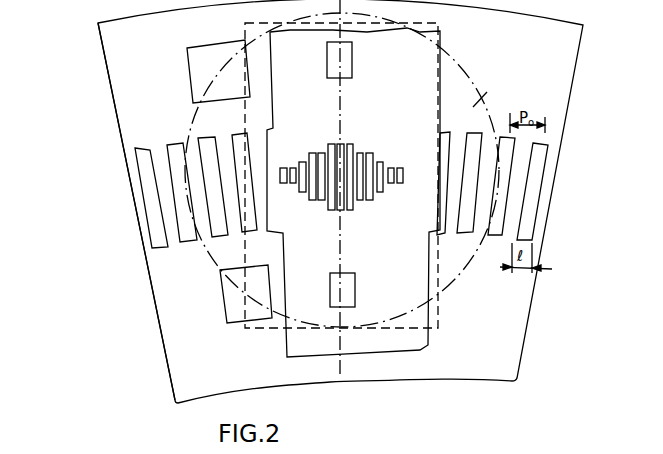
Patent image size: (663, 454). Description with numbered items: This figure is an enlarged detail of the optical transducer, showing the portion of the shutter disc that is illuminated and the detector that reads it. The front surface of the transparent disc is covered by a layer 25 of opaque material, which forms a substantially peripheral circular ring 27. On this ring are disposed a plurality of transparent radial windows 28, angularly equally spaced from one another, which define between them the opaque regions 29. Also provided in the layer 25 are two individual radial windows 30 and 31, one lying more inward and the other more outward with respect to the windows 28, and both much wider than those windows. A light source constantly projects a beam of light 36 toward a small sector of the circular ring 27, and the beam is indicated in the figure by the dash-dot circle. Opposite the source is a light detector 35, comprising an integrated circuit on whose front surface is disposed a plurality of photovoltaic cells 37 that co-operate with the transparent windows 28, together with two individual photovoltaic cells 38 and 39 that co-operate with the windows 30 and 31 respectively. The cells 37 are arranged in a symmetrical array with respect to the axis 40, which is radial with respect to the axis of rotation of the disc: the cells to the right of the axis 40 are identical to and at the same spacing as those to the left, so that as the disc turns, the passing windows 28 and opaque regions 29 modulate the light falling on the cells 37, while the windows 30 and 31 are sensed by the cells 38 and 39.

The layer of opaque material 25 is at (388, 367).
The circular ring 27 is at (121, 215).
The transparent radial windows 28 is at (168, 147).
The opaque regions 29 is at (170, 217).
The individual radial window 30 is at (192, 72).
The individual radial window 31 is at (227, 307).
The light detector 35 is at (425, 333).
The beam of light 36 is at (498, 96).
The photovoltaic cells 37 is at (371, 207).
The individual photovoltaic cell 38 is at (352, 62).
The individual photovoltaic cell 39 is at (355, 288).
The axis 40 is at (340, 101).